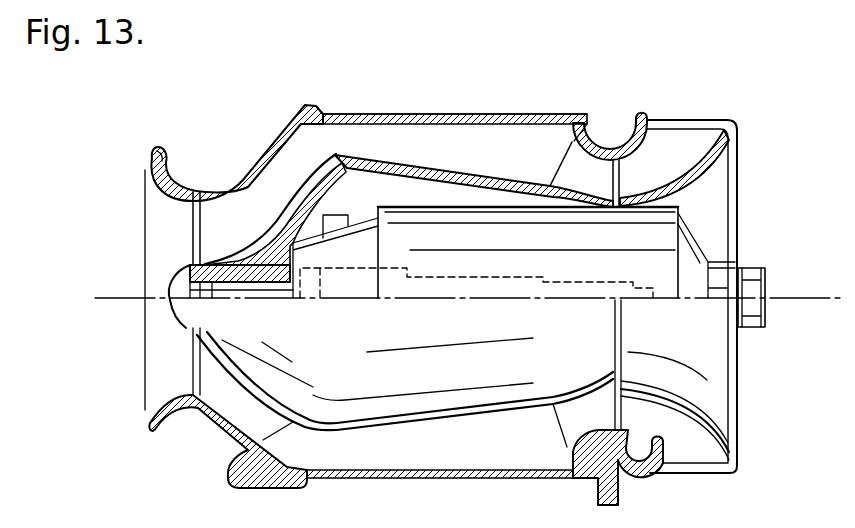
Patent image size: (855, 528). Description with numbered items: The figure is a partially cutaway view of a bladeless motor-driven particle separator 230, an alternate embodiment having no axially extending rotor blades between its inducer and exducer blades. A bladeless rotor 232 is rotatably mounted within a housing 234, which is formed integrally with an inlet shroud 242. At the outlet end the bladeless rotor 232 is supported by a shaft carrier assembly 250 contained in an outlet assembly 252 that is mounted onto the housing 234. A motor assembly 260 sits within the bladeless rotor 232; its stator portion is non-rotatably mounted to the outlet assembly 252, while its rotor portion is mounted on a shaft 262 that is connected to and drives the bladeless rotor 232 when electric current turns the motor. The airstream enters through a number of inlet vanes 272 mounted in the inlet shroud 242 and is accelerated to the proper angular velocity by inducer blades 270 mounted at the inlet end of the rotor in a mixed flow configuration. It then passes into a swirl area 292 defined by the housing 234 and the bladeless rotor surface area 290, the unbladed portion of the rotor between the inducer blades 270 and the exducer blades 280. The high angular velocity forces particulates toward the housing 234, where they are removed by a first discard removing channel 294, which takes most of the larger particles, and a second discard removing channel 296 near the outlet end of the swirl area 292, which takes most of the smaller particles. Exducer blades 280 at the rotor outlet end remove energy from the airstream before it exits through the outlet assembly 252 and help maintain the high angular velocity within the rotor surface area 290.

The bladeless motor-driven particle separator 230 is at (493, 87).
The bladeless rotor 232 is at (335, 153).
The housing 234 is at (437, 113).
The inlet shroud 242 is at (176, 165).
The shaft carrier assembly 250 is at (735, 265).
The outlet assembly 252 is at (715, 158).
The motor assembly 260 is at (650, 250).
The shaft 262 is at (233, 292).
The inducer blades 270 is at (258, 174).
The inlet vanes 272 is at (158, 227).
The exducer blades 280 is at (602, 170).
The rotor surface area 290 is at (485, 176).
The swirl area 292 is at (543, 138).
The first discard removing channel 294 is at (307, 103).
The second discard removing channel 296 is at (588, 122).